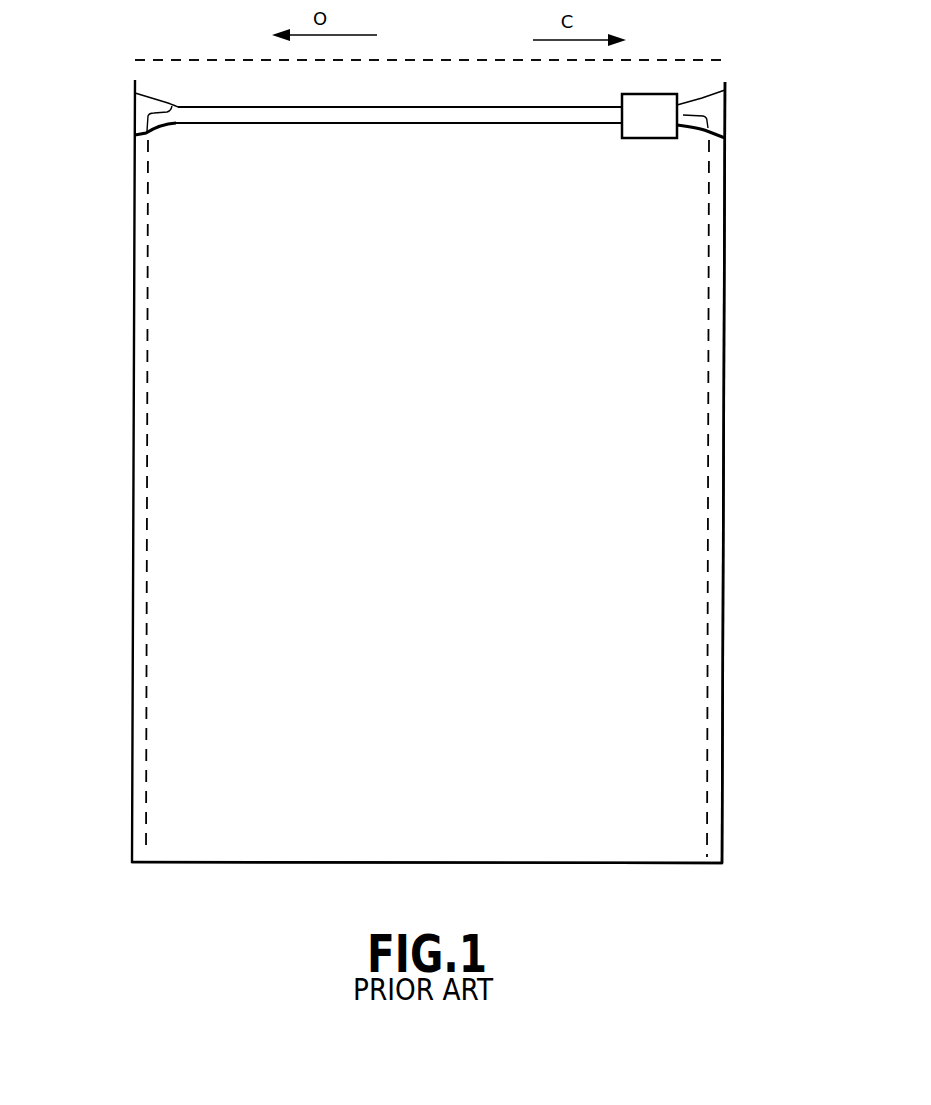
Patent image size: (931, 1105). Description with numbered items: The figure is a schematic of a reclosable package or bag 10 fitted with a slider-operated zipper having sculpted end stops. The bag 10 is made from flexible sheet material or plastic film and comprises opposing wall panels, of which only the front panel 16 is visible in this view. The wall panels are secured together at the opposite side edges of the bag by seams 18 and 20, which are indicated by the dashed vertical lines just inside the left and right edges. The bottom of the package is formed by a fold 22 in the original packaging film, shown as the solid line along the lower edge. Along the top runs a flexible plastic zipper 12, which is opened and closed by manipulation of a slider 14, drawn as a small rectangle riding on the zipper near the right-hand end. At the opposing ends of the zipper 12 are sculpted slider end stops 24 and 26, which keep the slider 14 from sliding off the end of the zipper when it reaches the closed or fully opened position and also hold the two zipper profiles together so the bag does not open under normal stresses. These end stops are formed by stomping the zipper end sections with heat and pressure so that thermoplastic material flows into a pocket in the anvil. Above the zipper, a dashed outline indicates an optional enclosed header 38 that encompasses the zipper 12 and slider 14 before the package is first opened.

The reclosable package or bag 10 is at (778, 247).
The flexible plastic zipper 12 is at (202, 113).
The slider 14 is at (648, 93).
The front panel 16 is at (677, 603).
The seam 18 is at (148, 590).
The seam 20 is at (707, 393).
The fold 22 is at (598, 865).
The slider end stop 24 is at (135, 122).
The slider end stop 26 is at (723, 82).
The enclosed header 38 is at (428, 57).